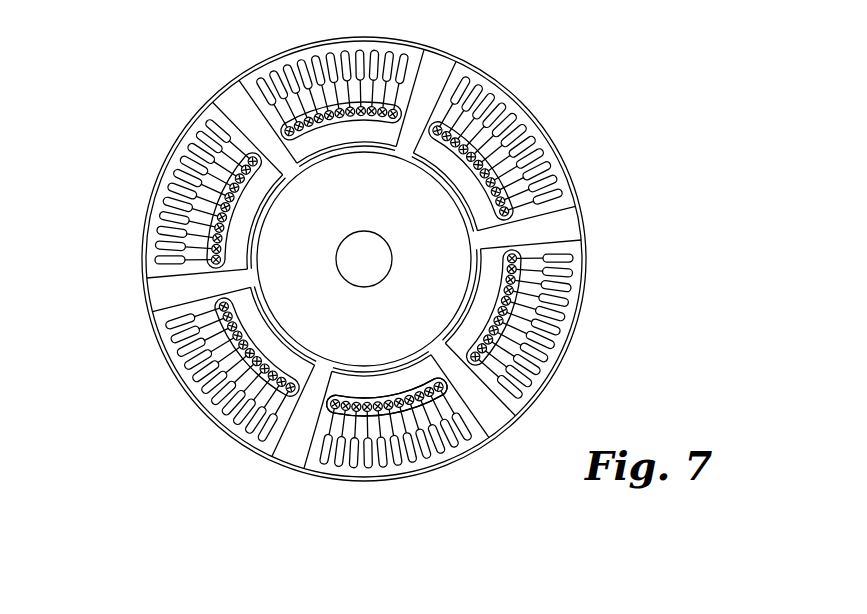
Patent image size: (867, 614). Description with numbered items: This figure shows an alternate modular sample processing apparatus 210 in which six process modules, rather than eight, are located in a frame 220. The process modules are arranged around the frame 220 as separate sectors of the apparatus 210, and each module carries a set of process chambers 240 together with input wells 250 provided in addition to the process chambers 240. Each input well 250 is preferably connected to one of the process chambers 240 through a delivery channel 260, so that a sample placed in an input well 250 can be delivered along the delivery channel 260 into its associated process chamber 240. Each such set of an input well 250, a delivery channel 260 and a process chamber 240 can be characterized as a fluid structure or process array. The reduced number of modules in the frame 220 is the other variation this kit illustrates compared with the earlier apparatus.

The sample processing apparatus 210 is at (560, 104).
The frame 220 is at (568, 228).
The process chamber 240 is at (544, 384).
The input well 250 is at (443, 385).
The delivery channel 260 is at (482, 427).